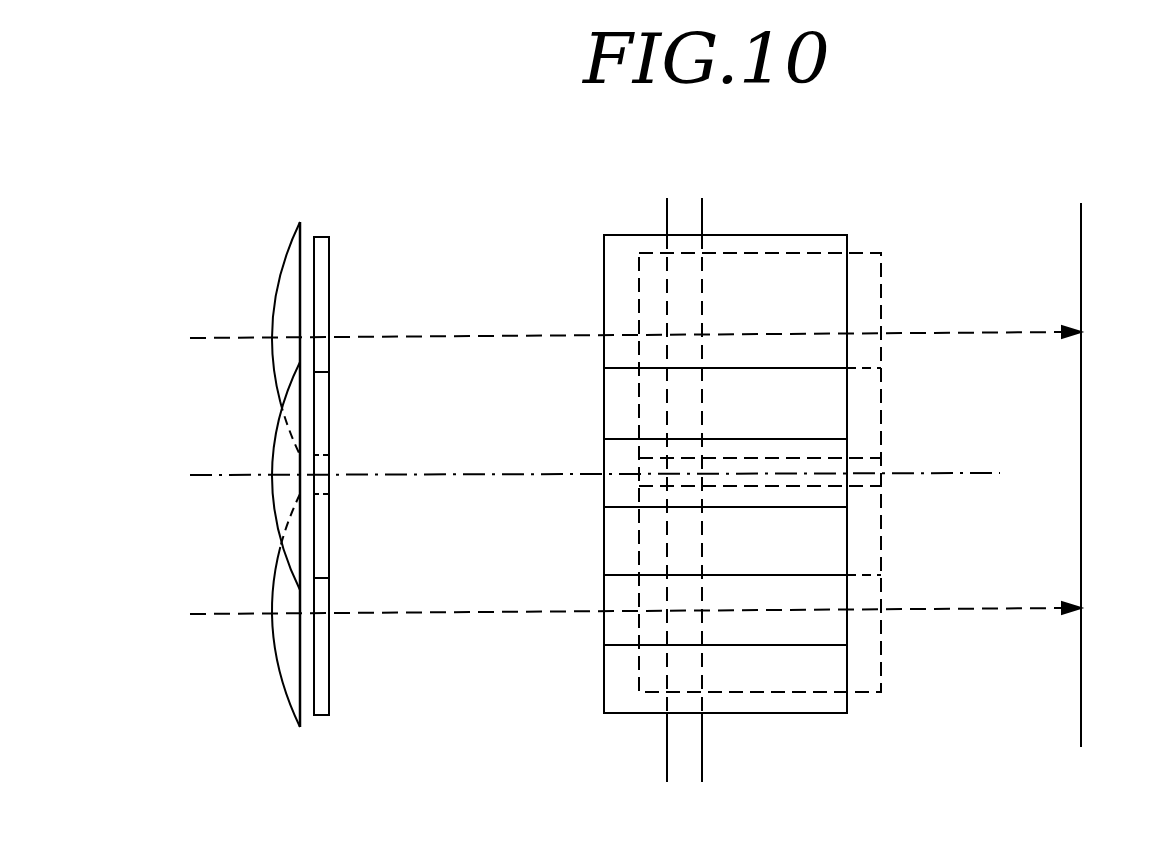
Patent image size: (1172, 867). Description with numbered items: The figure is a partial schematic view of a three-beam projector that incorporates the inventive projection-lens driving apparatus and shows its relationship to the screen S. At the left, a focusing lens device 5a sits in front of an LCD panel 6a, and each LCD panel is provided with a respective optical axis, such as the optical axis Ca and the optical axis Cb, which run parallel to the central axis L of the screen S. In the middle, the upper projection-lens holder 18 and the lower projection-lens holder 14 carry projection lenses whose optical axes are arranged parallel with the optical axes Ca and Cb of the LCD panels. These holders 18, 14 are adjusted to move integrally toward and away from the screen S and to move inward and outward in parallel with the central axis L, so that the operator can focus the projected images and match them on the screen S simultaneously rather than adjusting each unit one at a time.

The focusing lens device 5a is at (287, 460).
The LCD panel 6a is at (320, 400).
The lower projection-lens holder 14 is at (623, 262).
The upper projection-lens holder 18 is at (810, 427).
The optical axis Ca is at (662, 333).
The optical axis Cb is at (662, 613).
The central axis L is at (605, 467).
The screen S is at (1082, 724).